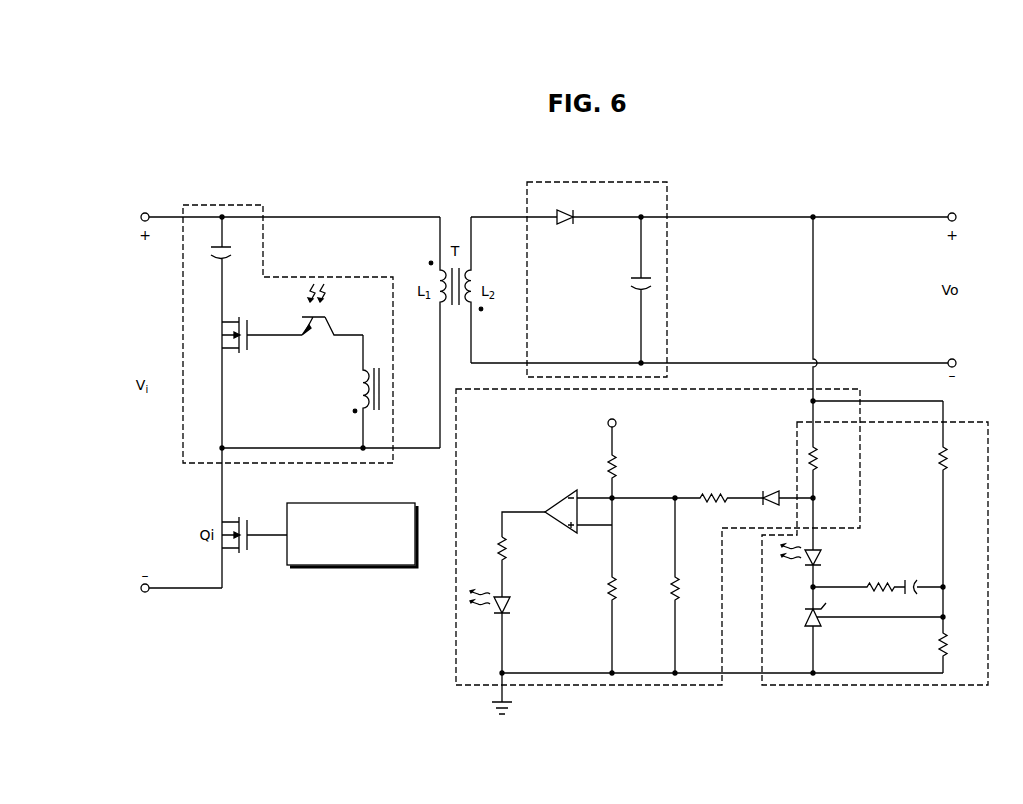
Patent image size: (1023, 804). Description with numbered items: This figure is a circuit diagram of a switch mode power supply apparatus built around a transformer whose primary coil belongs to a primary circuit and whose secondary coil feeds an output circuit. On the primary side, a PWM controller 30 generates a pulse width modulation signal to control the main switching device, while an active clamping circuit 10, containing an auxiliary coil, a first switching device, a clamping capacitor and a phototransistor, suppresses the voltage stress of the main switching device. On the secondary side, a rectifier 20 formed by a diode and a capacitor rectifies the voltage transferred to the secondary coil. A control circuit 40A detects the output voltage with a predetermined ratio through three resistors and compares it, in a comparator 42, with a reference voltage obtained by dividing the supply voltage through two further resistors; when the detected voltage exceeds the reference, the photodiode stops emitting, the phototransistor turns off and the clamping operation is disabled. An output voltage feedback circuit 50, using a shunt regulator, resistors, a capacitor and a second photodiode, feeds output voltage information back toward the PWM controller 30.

The active clamping circuit 10 is at (291, 277).
The rectifier 20 is at (667, 195).
The PWM controller 30 is at (380, 503).
The control circuit 40A is at (699, 555).
The comparator 42 is at (557, 497).
The output voltage feedback circuit 50 is at (880, 686).